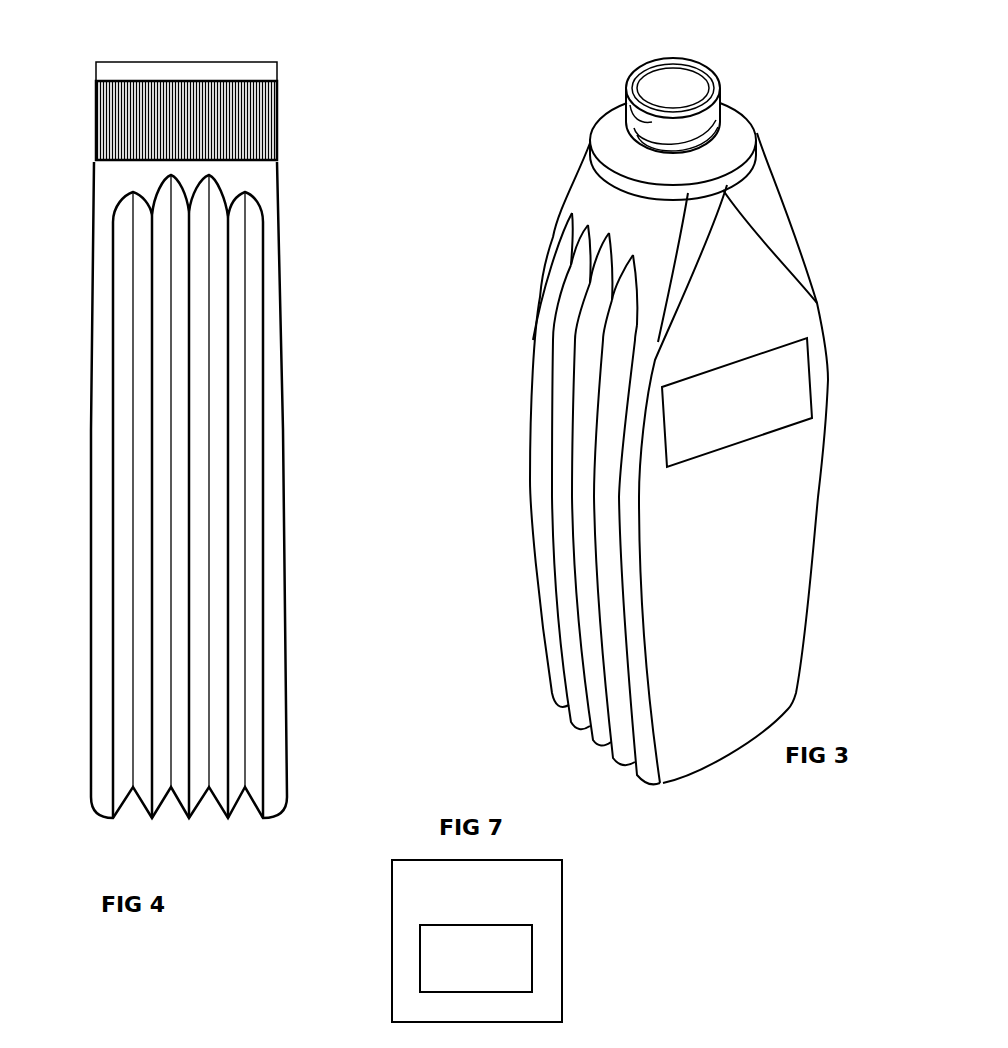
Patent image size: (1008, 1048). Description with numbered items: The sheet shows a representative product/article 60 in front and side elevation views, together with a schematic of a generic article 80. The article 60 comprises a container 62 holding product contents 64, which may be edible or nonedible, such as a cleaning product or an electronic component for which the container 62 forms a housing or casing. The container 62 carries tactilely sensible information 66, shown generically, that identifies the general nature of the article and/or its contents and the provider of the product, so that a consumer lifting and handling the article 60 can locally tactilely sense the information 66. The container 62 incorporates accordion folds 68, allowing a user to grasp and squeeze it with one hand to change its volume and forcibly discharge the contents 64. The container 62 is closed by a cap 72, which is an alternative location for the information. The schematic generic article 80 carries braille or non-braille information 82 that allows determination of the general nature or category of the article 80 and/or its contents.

In FIG. 4, the product/article 60 is at (205, 465).
In FIG. 3, the product/article 60 is at (712, 423).
In FIG. 4, the container 62 is at (287, 372).
In FIG. 3, the container 62 is at (748, 604).
In FIG. 4, the product contents 64 is at (156, 544).
In FIG. 3, the product contents 64 is at (675, 675).
In FIG. 3, the tactilely sensible information 66 is at (723, 437).
In FIG. 4, the accordion folds 68 is at (146, 353).
In FIG. 4, the cap 72 is at (198, 122).
In FIG. 7, the generic article 80 is at (477, 941).
In FIG. 7, the braille or non-braille information 82 is at (476, 958).